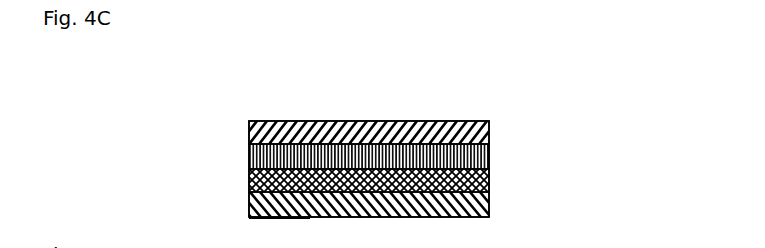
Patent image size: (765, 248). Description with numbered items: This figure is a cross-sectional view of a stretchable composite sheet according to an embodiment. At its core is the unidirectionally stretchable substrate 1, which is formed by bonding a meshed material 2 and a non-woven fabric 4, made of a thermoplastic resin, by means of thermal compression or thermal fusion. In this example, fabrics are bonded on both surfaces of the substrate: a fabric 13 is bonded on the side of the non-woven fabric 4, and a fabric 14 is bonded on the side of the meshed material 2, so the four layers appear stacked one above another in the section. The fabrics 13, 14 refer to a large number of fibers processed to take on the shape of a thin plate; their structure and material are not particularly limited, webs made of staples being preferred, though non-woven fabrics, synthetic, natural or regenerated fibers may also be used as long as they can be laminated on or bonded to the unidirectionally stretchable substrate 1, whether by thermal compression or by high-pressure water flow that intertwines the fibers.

The fabric 13 is at (490, 127).
The non-woven fabric 4 is at (490, 148).
The meshed material 2 is at (490, 176).
The unidirectionally stretchable substrate 1 is at (439, 166).
The fabric 14 is at (490, 205).